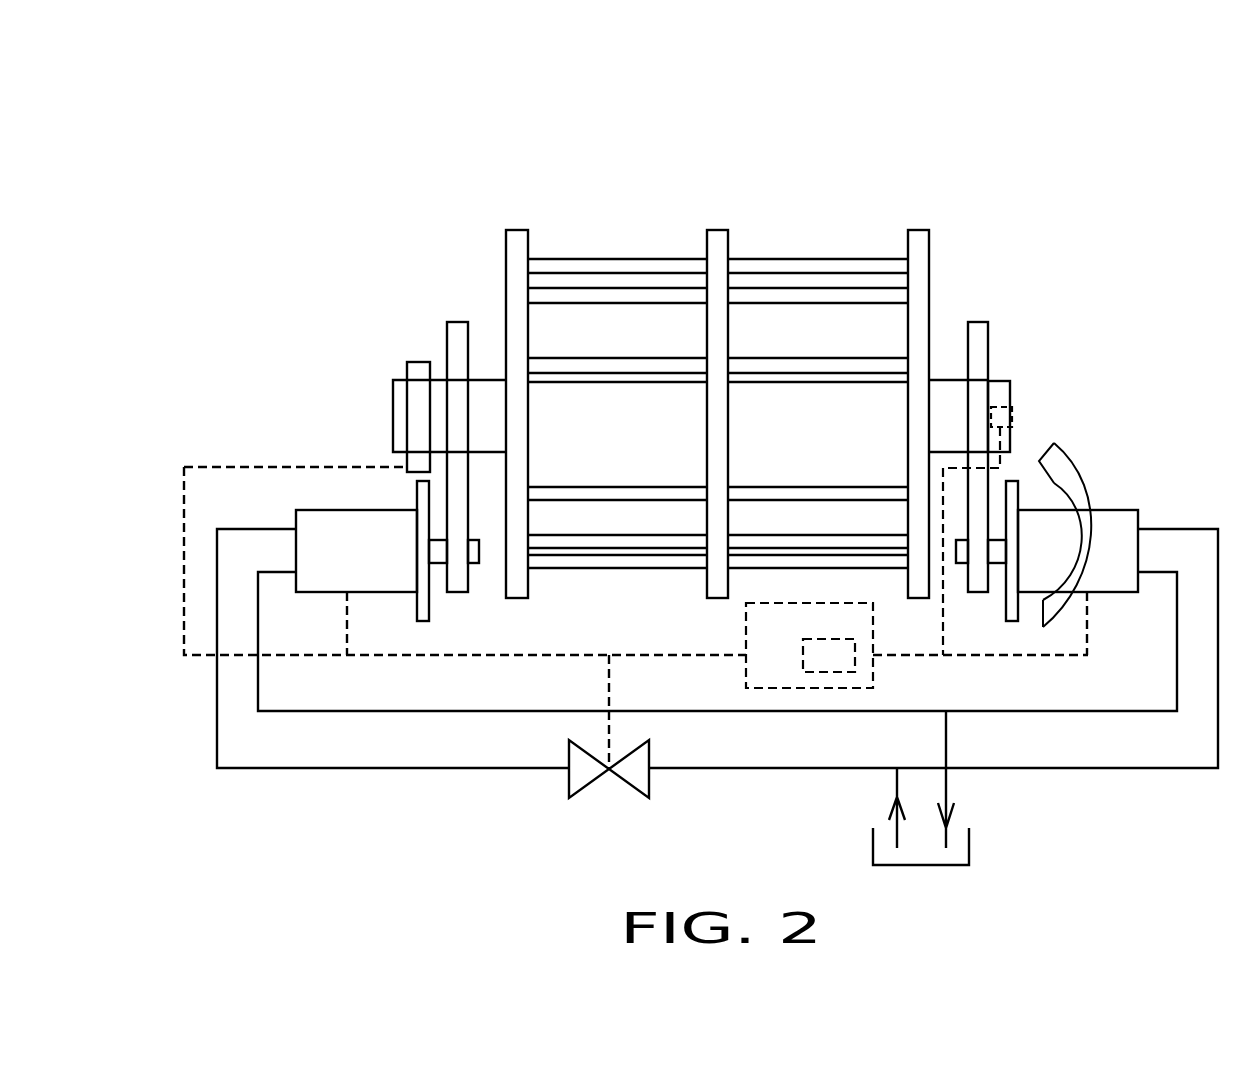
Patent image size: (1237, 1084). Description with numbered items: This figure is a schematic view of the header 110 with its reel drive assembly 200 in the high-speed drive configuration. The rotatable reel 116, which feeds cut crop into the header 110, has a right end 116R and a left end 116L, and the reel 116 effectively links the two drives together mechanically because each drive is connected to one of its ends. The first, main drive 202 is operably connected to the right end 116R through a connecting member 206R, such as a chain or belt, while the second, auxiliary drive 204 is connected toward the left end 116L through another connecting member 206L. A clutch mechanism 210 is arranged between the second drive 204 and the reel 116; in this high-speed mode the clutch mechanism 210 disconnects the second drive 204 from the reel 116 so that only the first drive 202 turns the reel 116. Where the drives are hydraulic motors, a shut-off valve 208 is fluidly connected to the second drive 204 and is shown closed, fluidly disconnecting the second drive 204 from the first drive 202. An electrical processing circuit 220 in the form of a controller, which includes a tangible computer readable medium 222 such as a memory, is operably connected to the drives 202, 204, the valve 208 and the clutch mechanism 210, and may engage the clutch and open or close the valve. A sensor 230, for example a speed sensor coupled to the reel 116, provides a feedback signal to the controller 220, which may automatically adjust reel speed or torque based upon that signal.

The header 110 is at (808, 186).
The reel 116 is at (643, 259).
The left end of the reel 116L is at (380, 413).
The right end of the reel 116R is at (1023, 364).
The reel drive assembly 200 is at (965, 136).
The first drive 202 is at (1123, 510).
The second drive 204 is at (296, 512).
The connecting member 206L is at (456, 322).
The connecting member 206R is at (980, 322).
The shut-off valve 208 is at (589, 790).
The clutch mechanism 210 is at (407, 370).
The electrical processing circuit 220 is at (746, 632).
The tangible computer readable medium 222 is at (855, 668).
The sensor 230 is at (1012, 412).